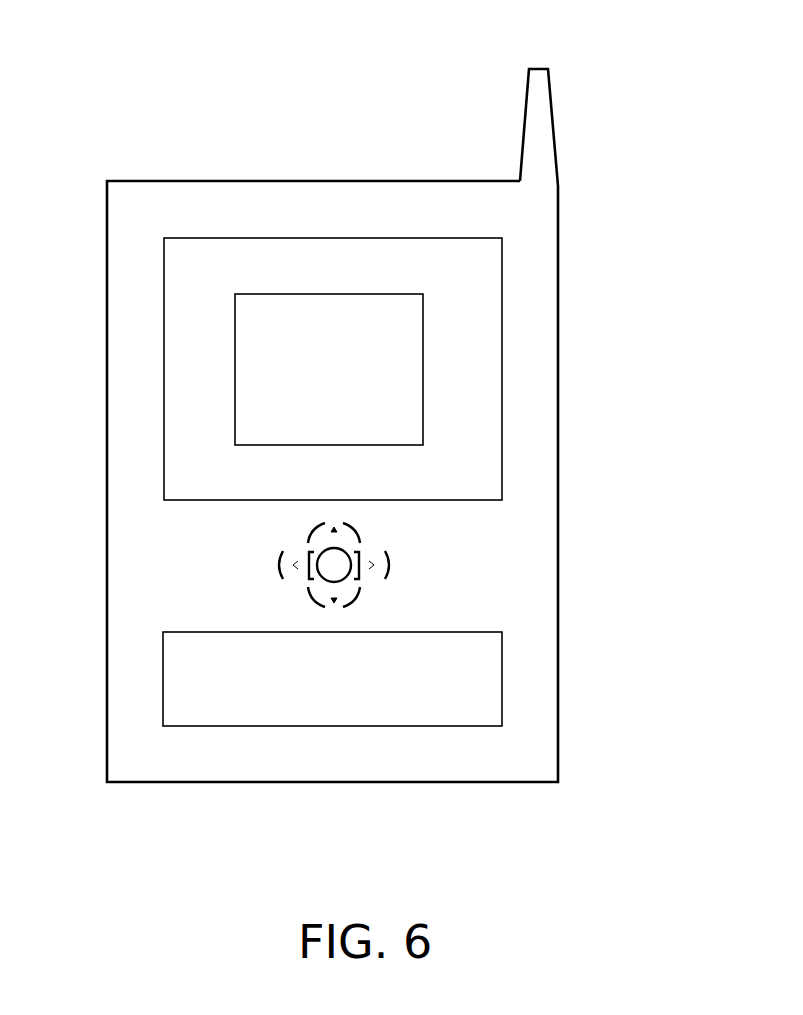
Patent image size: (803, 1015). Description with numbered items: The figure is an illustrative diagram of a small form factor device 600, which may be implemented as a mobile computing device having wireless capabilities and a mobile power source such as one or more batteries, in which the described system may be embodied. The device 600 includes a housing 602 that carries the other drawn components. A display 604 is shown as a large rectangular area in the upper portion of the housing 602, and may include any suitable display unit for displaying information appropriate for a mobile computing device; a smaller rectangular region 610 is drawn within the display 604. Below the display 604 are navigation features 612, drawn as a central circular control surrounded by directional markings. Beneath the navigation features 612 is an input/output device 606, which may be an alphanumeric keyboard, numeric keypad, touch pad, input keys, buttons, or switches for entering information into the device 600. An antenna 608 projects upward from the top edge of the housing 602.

The small form factor device 600 is at (126, 89).
The housing 602 is at (559, 482).
The display 604 is at (503, 256).
The input/output (I/O) device 606 is at (503, 669).
The antenna 608 is at (523, 118).
The display window 610 is at (424, 389).
The navigation features 612 is at (404, 557).